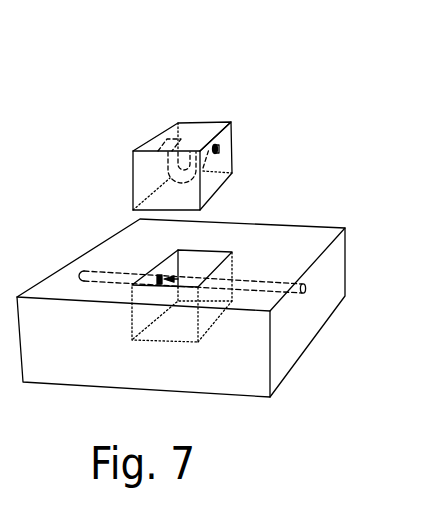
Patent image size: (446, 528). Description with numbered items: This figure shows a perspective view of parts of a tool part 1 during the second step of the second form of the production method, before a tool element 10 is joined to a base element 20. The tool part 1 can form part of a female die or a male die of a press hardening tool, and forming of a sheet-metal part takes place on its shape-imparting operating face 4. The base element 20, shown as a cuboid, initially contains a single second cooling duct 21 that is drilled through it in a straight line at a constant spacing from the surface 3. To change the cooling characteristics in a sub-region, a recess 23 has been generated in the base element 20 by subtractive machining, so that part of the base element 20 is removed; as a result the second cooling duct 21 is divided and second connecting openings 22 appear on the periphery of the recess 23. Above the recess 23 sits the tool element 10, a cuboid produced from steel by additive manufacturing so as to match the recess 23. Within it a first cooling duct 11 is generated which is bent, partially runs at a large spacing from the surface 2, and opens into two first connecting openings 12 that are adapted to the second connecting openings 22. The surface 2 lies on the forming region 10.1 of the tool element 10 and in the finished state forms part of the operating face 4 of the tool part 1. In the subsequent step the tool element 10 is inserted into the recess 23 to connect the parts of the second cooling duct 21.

The tool part 1 is at (330, 72).
The surface 2 is at (170, 118).
The surface 3 is at (80, 245).
The operating face 4 is at (181, 260).
The tool element 10 is at (233, 137).
The forming region 10.1 is at (118, 155).
The first cooling duct 11 is at (168, 170).
The first connecting openings 12 is at (140, 143).
The base element 20 is at (253, 382).
The second cooling duct 21 is at (264, 279).
The second connecting openings 22 is at (205, 271).
The recess 23 is at (156, 254).